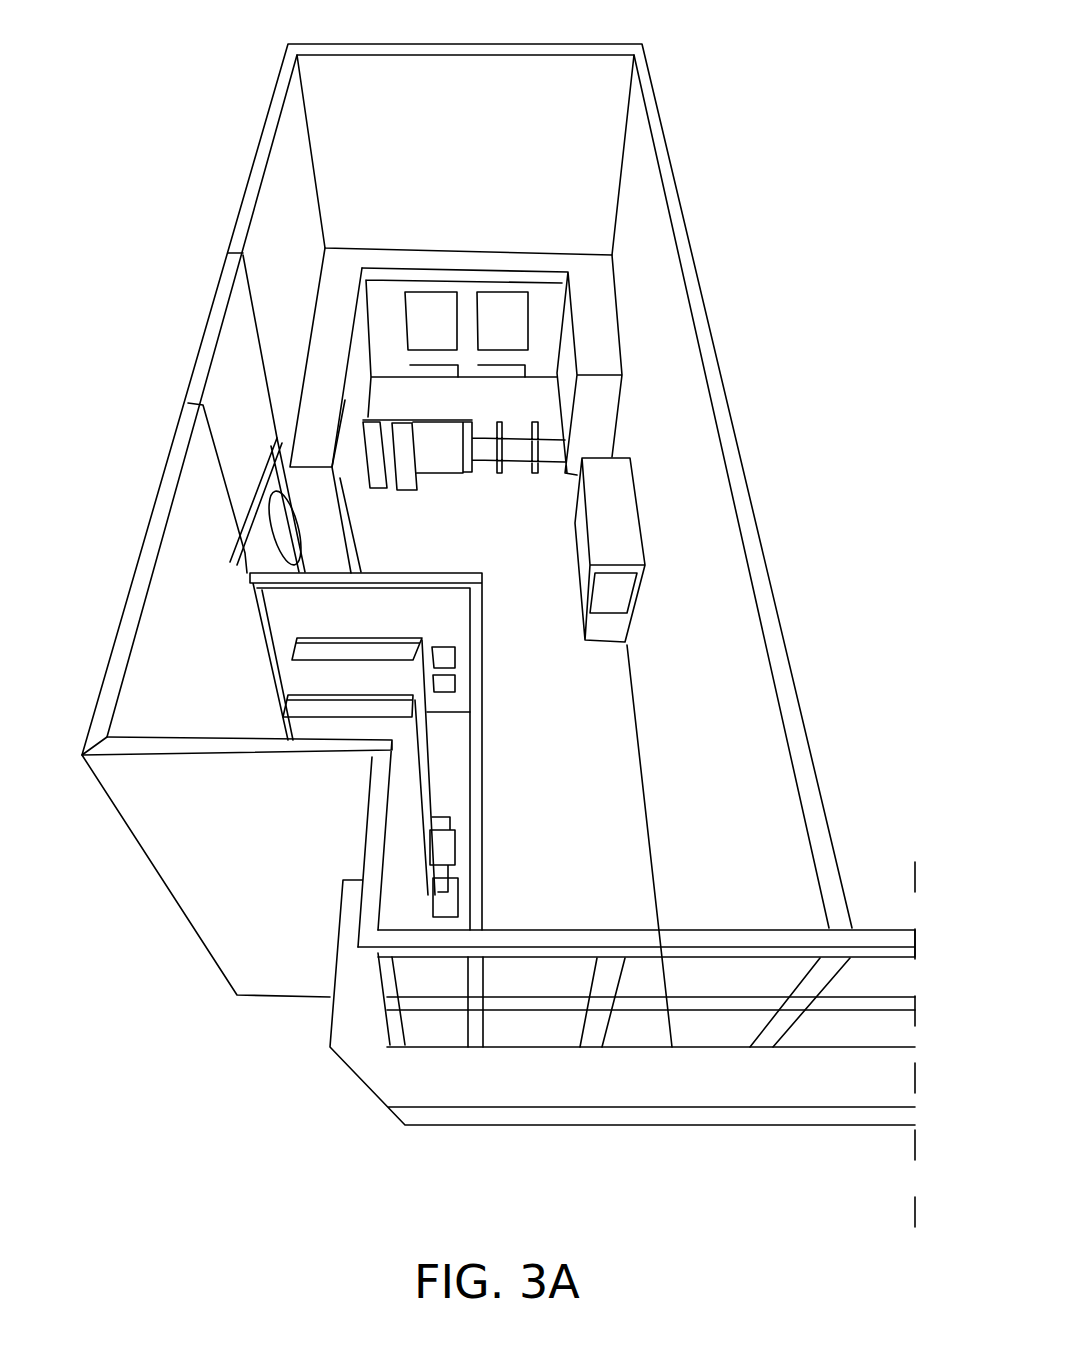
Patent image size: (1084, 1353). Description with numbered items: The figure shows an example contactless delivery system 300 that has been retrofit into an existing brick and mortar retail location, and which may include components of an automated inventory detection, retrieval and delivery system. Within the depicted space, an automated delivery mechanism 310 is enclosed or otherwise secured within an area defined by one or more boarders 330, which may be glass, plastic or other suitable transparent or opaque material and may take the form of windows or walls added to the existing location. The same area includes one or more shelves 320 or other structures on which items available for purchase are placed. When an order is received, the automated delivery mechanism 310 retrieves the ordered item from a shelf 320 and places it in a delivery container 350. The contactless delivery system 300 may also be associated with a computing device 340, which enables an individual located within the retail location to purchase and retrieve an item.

The contactless delivery system 300 is at (255, 80).
The automated delivery mechanism 310 is at (452, 872).
The shelves 320 is at (413, 790).
The boarders 330 is at (473, 633).
The computing device 340 is at (437, 658).
The delivery container 350 is at (440, 683).